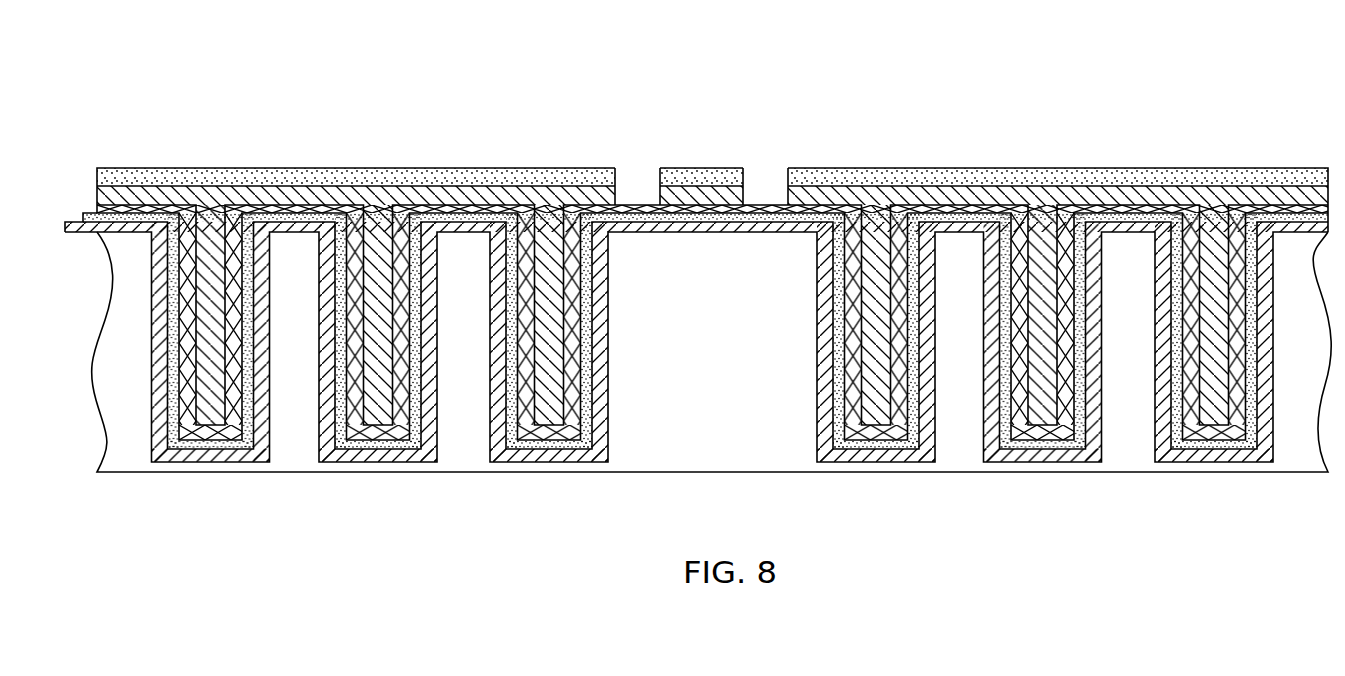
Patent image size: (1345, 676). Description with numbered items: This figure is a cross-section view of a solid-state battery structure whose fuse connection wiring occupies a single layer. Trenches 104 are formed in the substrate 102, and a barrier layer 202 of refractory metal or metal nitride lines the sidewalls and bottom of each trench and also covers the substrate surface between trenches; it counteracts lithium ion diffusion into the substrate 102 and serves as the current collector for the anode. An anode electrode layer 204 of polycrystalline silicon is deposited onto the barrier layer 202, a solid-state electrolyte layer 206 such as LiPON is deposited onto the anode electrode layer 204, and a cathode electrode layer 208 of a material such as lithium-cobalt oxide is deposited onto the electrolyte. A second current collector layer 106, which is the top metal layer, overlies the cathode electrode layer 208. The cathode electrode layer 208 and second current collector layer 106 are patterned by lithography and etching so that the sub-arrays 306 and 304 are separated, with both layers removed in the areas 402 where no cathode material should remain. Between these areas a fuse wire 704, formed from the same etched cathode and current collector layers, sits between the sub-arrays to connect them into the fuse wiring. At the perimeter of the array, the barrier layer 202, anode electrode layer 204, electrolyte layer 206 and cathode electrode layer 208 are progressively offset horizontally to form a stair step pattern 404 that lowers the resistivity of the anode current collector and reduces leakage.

The substrate 102 is at (141, 390).
The trenches 104 is at (696, 381).
The second current collector layer 106 is at (167, 178).
The barrier layer 202 is at (822, 401).
The anode electrode layer 204 is at (838, 360).
The solid-state electrolyte layer 206 is at (853, 320).
The cathode electrode layer 208 is at (870, 282).
The sub-array 304 is at (1050, 160).
The sub-array 306 is at (418, 160).
The areas where there should be no cathode material 402 is at (634, 170).
The stair step pattern 404 is at (78, 183).
The fuse wires 704 is at (698, 178).